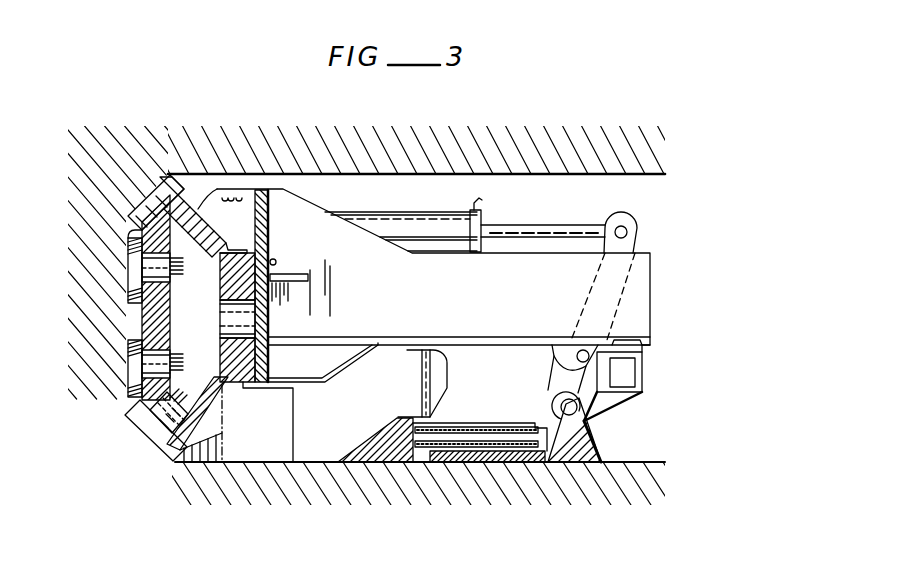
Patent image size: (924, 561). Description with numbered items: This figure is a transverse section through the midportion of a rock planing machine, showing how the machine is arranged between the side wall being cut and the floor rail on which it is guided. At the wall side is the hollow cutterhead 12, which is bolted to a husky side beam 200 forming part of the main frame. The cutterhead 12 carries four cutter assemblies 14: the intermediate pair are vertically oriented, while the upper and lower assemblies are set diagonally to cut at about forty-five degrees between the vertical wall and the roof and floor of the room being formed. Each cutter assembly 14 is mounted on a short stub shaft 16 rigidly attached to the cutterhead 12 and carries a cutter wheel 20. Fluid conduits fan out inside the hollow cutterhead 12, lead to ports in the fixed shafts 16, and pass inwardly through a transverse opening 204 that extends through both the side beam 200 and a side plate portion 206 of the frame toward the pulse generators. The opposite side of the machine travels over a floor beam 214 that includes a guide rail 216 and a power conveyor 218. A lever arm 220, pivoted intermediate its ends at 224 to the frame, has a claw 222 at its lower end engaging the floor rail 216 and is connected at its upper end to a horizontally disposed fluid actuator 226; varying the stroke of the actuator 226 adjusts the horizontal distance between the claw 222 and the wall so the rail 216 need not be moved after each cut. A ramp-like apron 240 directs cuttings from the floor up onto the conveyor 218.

The cutterhead 12 is at (221, 397).
The cutter assembly 14 is at (143, 194).
The stub shaft 16 is at (170, 280).
The cutter wheel 20 is at (168, 176).
The side beam 200 is at (228, 358).
The transverse opening 204 is at (240, 322).
The side plate portion 206 is at (268, 246).
The floor beam 214 is at (388, 457).
The guide rail 216 is at (590, 424).
The power conveyor 218 is at (490, 442).
The lever arm 220 is at (562, 374).
The claw 222 is at (553, 392).
The pivot 224 is at (578, 350).
The fluid actuator 226 is at (413, 224).
The apron 240 is at (378, 429).